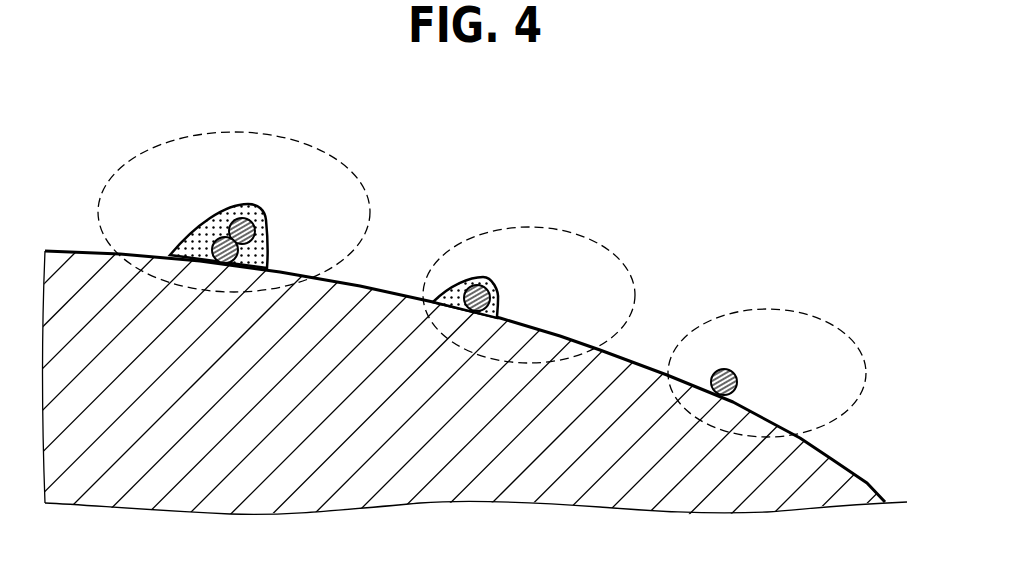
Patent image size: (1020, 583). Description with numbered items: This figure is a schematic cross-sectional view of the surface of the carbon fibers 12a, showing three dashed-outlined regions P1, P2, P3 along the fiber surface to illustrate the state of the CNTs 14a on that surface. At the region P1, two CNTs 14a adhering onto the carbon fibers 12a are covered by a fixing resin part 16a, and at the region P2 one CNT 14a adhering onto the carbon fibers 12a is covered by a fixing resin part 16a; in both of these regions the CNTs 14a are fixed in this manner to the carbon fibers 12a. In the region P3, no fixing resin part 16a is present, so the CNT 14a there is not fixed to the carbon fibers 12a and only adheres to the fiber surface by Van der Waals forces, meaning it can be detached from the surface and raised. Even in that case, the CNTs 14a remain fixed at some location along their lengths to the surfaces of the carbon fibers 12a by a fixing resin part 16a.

The carbon fiber 12a is at (352, 498).
The CNT 14a is at (231, 216).
The fixing resin part 16a is at (262, 210).
The region P1 is at (320, 148).
The region P2 is at (595, 238).
The region P3 is at (812, 313).